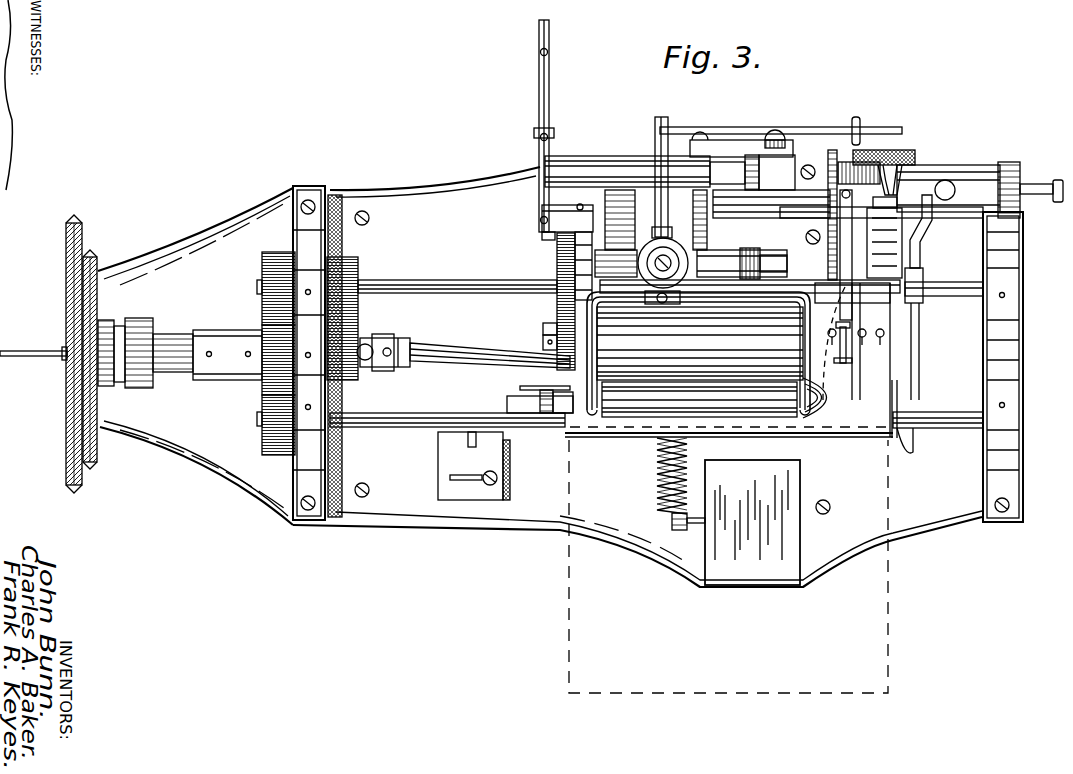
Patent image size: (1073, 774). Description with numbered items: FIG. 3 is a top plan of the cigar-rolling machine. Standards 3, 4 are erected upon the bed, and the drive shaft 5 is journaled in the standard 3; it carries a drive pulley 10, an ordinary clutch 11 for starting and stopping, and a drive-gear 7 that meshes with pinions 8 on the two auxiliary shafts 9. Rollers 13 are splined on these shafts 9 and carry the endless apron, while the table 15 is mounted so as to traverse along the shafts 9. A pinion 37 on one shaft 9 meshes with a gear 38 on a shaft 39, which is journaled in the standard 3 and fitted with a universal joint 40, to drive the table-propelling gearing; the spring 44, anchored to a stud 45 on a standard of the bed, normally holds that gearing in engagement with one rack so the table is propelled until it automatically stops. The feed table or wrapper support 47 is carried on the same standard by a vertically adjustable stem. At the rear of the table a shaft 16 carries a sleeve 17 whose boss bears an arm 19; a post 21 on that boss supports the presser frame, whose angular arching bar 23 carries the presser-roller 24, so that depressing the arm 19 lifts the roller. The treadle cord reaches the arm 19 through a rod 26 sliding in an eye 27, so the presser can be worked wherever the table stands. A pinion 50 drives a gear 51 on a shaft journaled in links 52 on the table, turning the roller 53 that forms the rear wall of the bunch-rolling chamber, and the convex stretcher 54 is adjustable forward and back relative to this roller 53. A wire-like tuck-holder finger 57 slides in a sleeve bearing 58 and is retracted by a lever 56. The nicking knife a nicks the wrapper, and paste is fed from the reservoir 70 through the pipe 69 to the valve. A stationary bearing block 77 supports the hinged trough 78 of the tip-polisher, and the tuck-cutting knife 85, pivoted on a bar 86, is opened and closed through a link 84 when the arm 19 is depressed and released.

The standard 3 is at (317, 353).
The standard 4 is at (1003, 367).
The drive shaft 5 is at (207, 347).
The drive-gear 7 is at (262, 382).
The pinions 8 is at (266, 353).
The auxiliary shafts 9 is at (656, 343).
The drive pulley 10 is at (88, 346).
The clutch 11 is at (125, 342).
The rollers 13 is at (804, 253).
The table 15 is at (729, 419).
The shaft 16 is at (775, 248).
The sleeve 17 is at (672, 235).
The arm 19 is at (647, 172).
The post 21 is at (663, 262).
The angular and arching bar 23 is at (698, 353).
The presser-roller 24 is at (699, 399).
The rod 26 is at (781, 119).
The eye 27 is at (867, 120).
The pinion 37 is at (354, 309).
The gear 38 is at (368, 369).
The shaft 39 is at (490, 350).
The universal joint 40 is at (385, 343).
The spring 44 is at (652, 476).
The stud 45 is at (669, 524).
The feed table or wrapper support 47 is at (752, 522).
The pinion 50 is at (557, 272).
The gear 51 is at (541, 323).
The links 52 is at (538, 340).
The roller 53 is at (700, 343).
The stretcher 54 is at (821, 408).
The lever 56 is at (536, 403).
The tuck-holder finger 57 is at (520, 396).
The sleeve bearing 58 is at (560, 393).
The pipe 69 is at (872, 237).
The paste reservoir 70 is at (980, 190).
The bearing block 77 is at (752, 172).
The trough 78 is at (627, 171).
The link 84 is at (530, 126).
The tuck-cutting knife 85 is at (554, 119).
The bar 86 is at (552, 212).
The nicking knife a is at (850, 356).